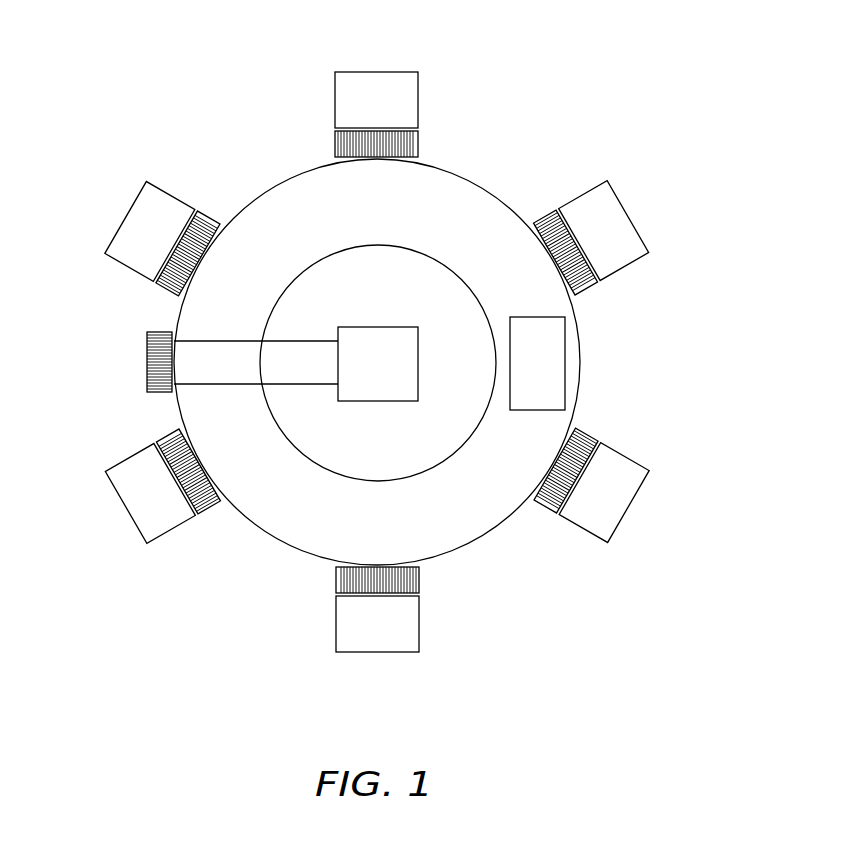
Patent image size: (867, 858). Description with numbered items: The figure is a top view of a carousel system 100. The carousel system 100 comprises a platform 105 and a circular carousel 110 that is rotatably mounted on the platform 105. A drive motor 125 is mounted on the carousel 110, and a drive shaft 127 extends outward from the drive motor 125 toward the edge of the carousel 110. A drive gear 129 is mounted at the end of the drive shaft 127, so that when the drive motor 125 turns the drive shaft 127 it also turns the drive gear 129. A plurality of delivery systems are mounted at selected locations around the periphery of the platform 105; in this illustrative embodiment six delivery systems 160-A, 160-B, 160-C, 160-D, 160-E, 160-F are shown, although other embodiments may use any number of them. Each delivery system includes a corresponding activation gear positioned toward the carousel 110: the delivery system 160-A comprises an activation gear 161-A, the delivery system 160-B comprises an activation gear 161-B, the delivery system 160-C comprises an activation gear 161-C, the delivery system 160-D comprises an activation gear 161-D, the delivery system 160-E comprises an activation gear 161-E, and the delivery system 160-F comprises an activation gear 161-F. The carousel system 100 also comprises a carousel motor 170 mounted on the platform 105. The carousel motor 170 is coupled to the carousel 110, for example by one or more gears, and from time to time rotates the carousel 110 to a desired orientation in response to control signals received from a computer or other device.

The carousel system 100 is at (572, 74).
The platform 105 is at (360, 211).
The circular carousel 110 is at (360, 300).
The drive motor 125 is at (360, 371).
The drive shaft 127 is at (240, 373).
The drive gear 129 is at (145, 355).
The carousel motor 170 is at (521, 372).
The delivery system 160-A is at (378, 72).
The delivery system 160-B is at (625, 217).
The delivery system 160-C is at (627, 508).
The delivery system 160-D is at (373, 653).
The delivery system 160-E is at (127, 512).
The delivery system 160-F is at (127, 217).
The activation gear 161-A is at (416, 143).
The activation gear 161-B is at (594, 287).
The activation gear 161-C is at (582, 437).
The activation gear 161-D is at (418, 578).
The activation gear 161-E is at (211, 513).
The activation gear 161-F is at (210, 212).